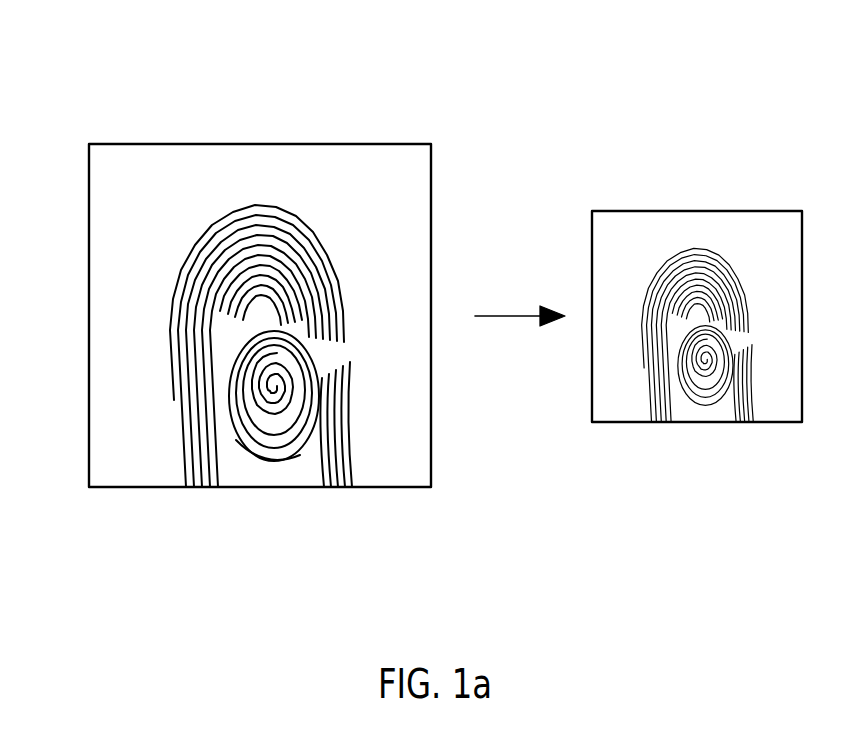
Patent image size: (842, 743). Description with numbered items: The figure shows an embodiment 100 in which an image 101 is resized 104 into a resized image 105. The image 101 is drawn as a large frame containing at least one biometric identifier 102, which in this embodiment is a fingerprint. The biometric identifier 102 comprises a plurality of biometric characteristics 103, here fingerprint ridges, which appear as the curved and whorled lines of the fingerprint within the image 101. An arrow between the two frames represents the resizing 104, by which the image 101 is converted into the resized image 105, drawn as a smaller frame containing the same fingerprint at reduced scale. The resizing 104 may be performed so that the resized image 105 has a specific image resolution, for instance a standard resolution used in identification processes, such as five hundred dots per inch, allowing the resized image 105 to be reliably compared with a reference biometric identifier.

The embodiment 100 is at (57, 71).
The image 101 is at (138, 144).
The biometric identifier 102 is at (158, 316).
The biometric characteristic 103 is at (243, 460).
The resizing 104 is at (503, 315).
The resized image 105 is at (640, 211).